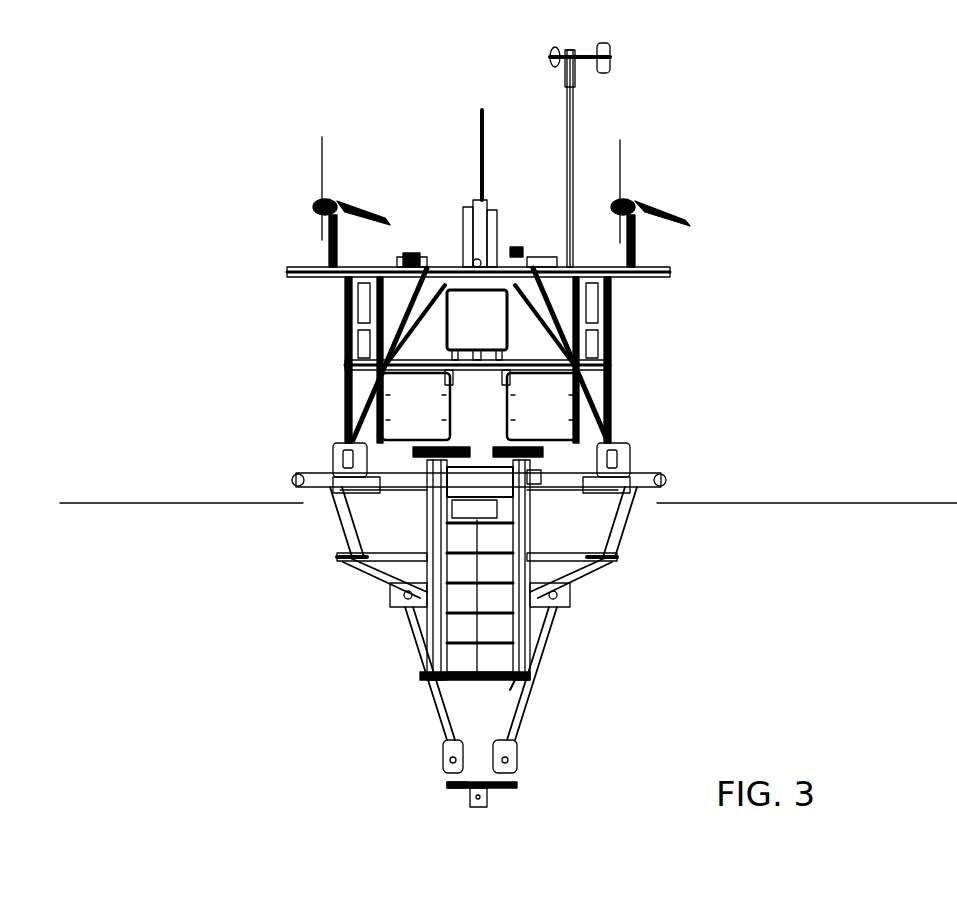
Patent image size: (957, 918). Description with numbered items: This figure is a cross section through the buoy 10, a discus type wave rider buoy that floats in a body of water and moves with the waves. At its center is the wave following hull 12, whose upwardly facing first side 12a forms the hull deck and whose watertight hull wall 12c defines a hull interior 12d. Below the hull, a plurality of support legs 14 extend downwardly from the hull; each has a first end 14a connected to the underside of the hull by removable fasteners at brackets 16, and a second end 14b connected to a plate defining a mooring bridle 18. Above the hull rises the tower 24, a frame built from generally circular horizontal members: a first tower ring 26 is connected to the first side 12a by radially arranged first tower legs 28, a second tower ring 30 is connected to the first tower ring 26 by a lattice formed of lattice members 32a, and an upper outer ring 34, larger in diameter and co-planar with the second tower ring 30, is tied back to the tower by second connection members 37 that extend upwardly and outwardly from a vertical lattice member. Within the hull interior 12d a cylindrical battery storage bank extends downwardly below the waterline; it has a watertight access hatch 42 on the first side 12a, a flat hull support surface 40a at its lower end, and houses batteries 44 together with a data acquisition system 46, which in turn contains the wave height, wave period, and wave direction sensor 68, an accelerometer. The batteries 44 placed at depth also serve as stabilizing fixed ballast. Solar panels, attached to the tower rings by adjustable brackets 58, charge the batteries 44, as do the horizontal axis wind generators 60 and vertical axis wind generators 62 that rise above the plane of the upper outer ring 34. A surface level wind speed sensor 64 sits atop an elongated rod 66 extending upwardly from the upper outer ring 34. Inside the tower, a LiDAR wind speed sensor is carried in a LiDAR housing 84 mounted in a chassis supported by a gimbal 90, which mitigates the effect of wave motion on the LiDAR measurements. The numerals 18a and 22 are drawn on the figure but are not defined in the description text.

The buoy 10 is at (228, 88).
The wave following hull 12 is at (313, 546).
The first side 12a is at (645, 473).
The watertight hull wall 12c is at (633, 527).
The hull interior 12d is at (580, 537).
The support legs 14 is at (517, 720).
The first end 14a is at (417, 617).
The second end 14b is at (443, 746).
The brackets 16 is at (553, 603).
The mooring bridle 18 is at (517, 785).
The plate portion 18a is at (457, 793).
The ballast attachment 22 is at (490, 800).
The tower 24 is at (675, 359).
The first tower ring 26 is at (345, 378).
The first tower legs 28 is at (345, 435).
The second tower ring 30 is at (387, 267).
The lattice members 32a is at (553, 260).
The upper outer ring 34 is at (297, 269).
The second connection members 37 is at (347, 296).
The hull support surface 40a is at (512, 688).
The watertight access hatch 42 is at (513, 447).
The batteries 44 is at (460, 663).
The data acquisition system 46 is at (457, 485).
The brackets 58 is at (497, 378).
The horizontal axis wind generators 60 is at (337, 197).
The vertical axis wind generators 62 is at (493, 233).
The surface level wind speed sensor 64 is at (592, 44).
The elongated rod 66 is at (573, 120).
The wave height, wave period, and wave direction sensor 68 is at (535, 477).
The LiDAR housing 84 is at (345, 348).
The gimbal 90 is at (450, 245).